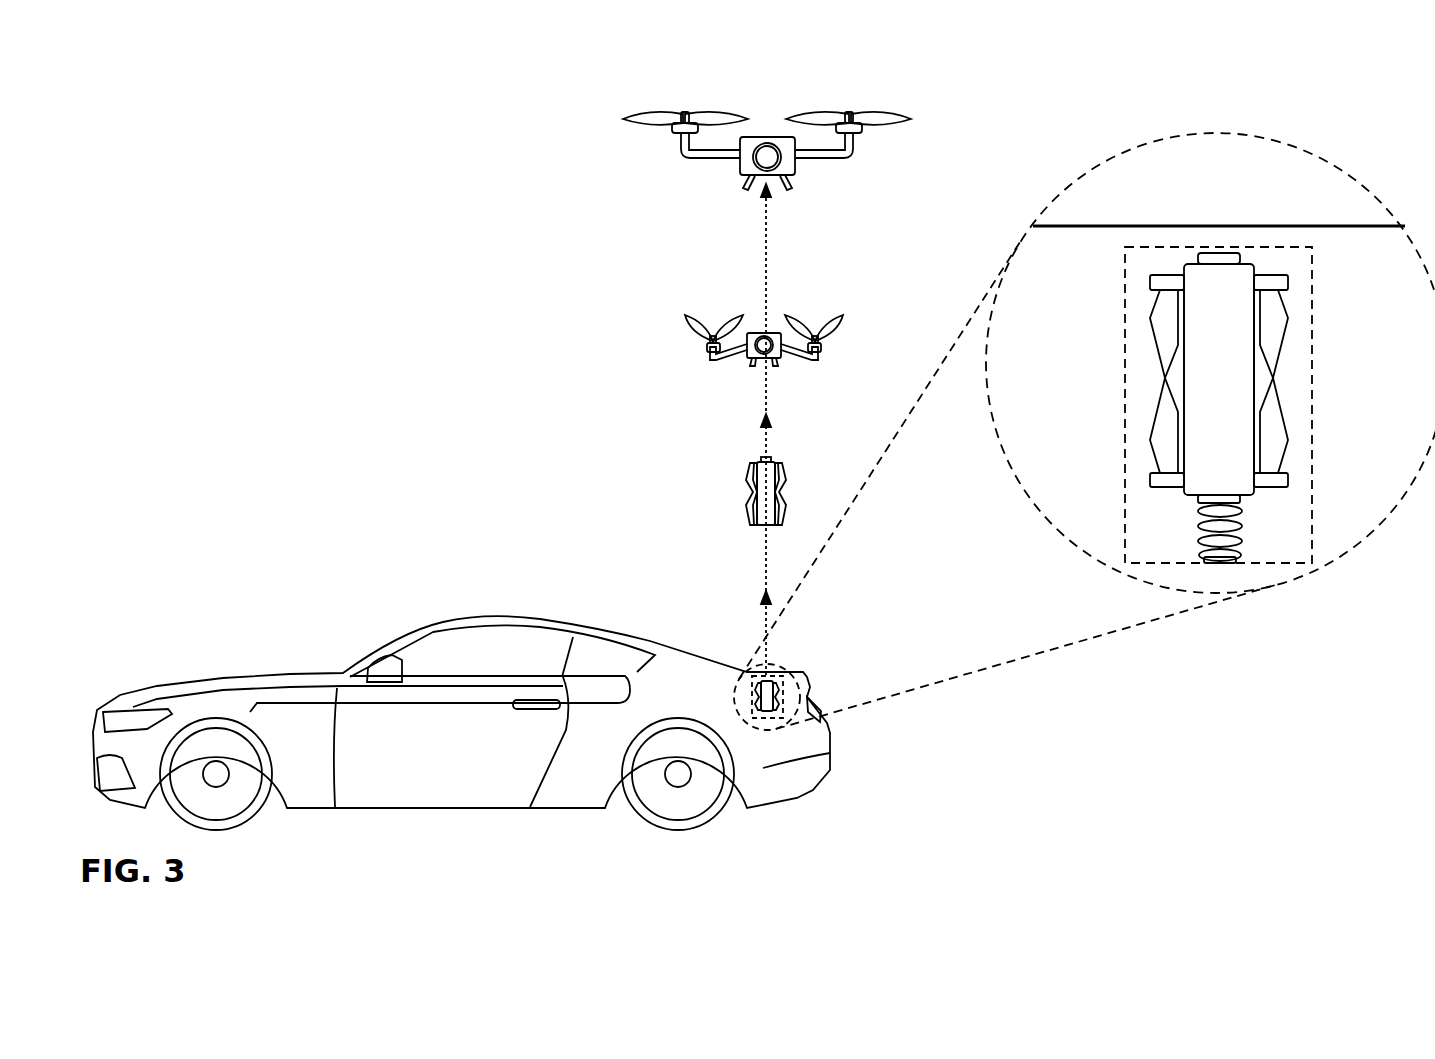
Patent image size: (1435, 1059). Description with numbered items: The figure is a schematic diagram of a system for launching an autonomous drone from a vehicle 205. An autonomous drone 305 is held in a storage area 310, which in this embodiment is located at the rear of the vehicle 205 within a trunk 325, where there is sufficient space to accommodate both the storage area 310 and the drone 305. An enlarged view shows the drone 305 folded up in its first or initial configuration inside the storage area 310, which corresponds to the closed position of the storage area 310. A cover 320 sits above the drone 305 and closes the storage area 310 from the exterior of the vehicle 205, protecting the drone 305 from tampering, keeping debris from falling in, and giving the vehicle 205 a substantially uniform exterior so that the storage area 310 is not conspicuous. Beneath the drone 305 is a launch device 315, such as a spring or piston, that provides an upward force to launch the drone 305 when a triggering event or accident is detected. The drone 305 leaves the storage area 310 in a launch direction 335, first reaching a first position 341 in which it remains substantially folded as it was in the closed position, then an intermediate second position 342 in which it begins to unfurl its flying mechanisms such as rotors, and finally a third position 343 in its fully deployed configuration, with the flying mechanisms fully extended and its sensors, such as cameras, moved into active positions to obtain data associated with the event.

The vehicle 205 is at (262, 672).
The autonomous drone 305 is at (767, 136).
The storage area 310 is at (1310, 429).
The launch device 315 is at (1232, 506).
The cover 320 is at (1220, 247).
The trunk 325 is at (1072, 389).
The launch direction 335 is at (775, 240).
The first position 341 is at (735, 492).
The intermediate second position 342 is at (681, 340).
The third position 343 is at (612, 119).